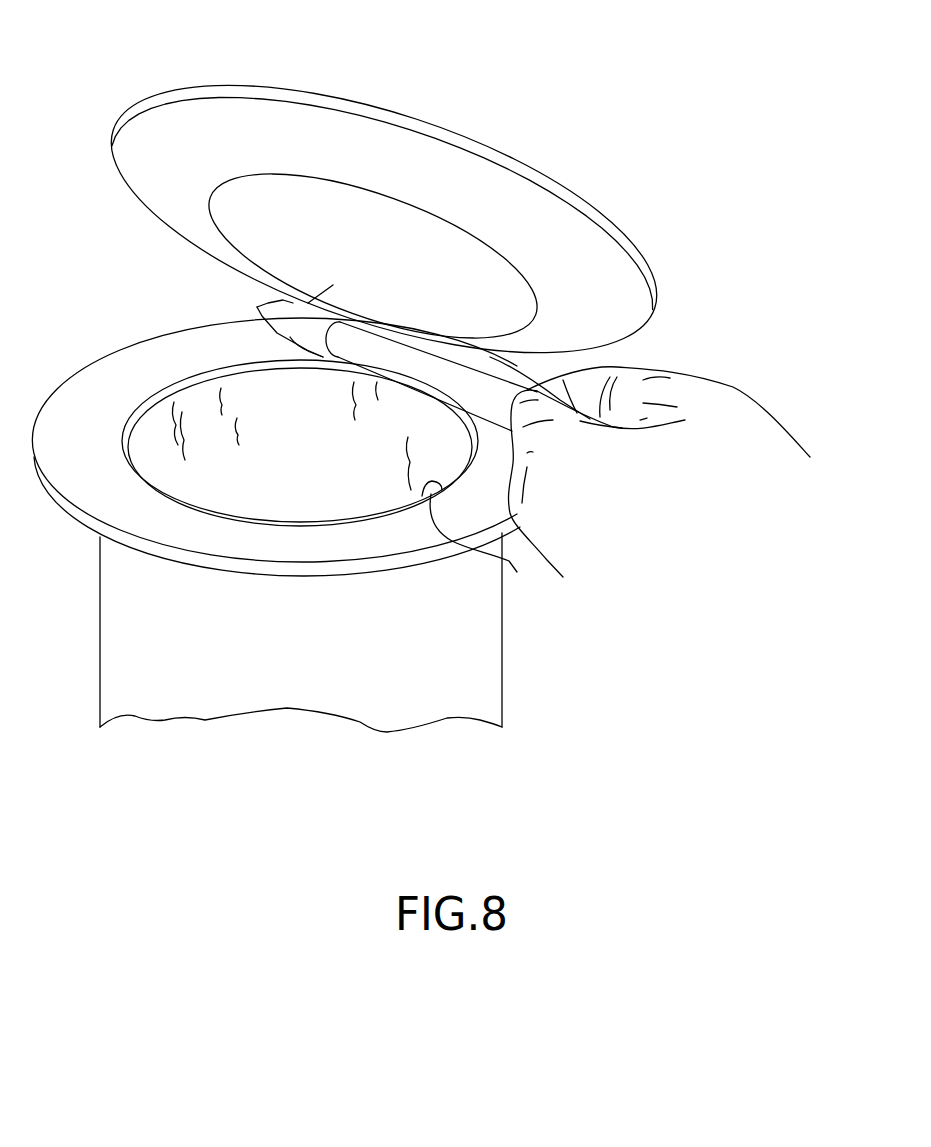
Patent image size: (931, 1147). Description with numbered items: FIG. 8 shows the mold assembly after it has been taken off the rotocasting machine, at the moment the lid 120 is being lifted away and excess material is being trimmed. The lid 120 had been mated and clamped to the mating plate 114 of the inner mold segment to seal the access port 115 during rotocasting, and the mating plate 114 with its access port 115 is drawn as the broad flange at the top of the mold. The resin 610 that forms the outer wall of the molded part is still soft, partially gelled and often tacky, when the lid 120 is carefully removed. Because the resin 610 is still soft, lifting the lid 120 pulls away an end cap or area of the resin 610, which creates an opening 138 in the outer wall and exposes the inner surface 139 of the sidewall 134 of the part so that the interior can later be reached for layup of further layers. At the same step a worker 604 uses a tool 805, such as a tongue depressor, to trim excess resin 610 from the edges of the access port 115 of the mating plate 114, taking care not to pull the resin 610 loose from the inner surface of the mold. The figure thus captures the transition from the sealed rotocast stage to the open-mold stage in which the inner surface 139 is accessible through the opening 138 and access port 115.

The lid 120 is at (197, 110).
The resin 610 is at (257, 307).
The tool 805 is at (455, 391).
The worker 604 is at (737, 408).
The opening 138 is at (140, 432).
The inner surface 139 is at (318, 451).
The mating plate 114 is at (133, 527).
The sidewall 134 is at (396, 509).
The access port 115 is at (292, 528).